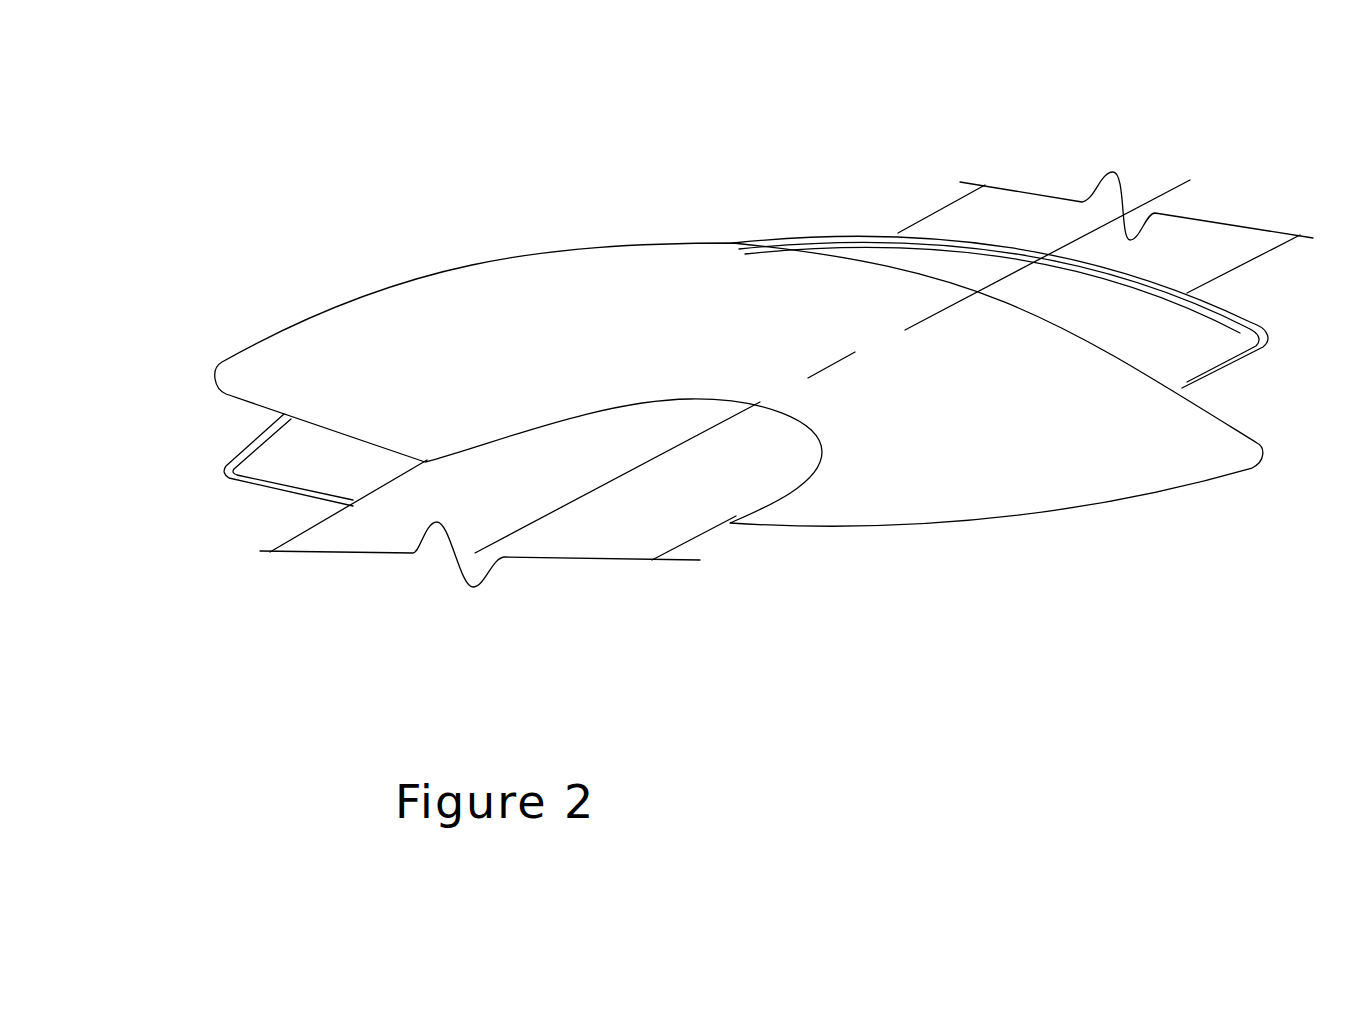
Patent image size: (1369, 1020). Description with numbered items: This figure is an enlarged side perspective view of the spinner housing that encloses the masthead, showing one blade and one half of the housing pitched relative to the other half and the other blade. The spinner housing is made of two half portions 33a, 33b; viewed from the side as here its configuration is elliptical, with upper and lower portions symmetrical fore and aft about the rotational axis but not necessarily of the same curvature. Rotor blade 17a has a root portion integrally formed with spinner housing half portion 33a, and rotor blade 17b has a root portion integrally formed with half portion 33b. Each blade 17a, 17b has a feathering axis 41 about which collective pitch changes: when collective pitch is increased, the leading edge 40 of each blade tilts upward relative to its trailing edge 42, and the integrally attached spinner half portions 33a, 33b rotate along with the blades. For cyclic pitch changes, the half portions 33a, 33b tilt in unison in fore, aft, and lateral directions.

The spinner housing half portion 33a is at (488, 275).
The spinner housing half portion 33b is at (813, 233).
The rotor blade 17a is at (595, 445).
The rotor blade 17b is at (958, 225).
The leading edge 40 is at (222, 480).
The feathering axis 41 is at (932, 317).
The trailing edge 42 is at (220, 355).